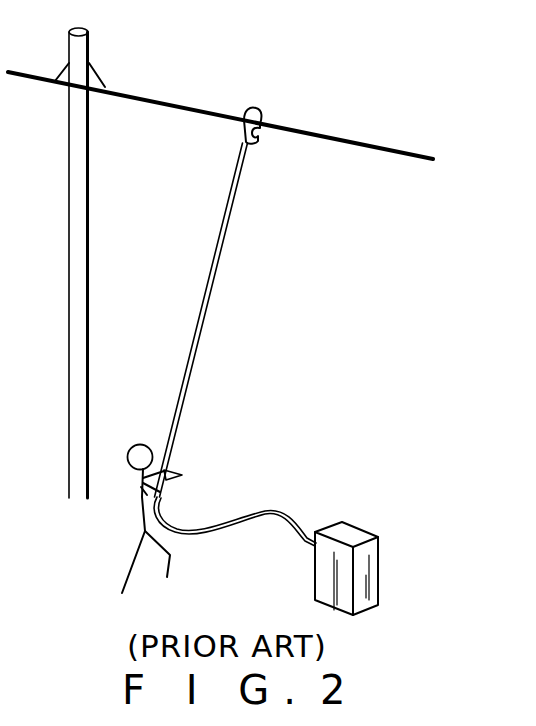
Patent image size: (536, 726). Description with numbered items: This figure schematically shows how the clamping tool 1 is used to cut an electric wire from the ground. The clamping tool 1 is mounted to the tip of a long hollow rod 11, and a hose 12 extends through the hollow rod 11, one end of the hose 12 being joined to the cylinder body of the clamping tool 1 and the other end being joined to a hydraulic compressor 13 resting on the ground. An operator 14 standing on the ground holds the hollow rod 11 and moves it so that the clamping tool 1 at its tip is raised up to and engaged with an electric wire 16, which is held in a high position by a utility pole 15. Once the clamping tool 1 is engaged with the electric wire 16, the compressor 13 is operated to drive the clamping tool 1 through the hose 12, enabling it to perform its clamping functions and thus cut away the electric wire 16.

The clamping tool 1 is at (267, 110).
The hollow rod 11 is at (198, 333).
The hose 12 is at (270, 512).
The hydraulic compressor 13 is at (380, 548).
The operator 14 is at (140, 525).
The utility pole 15 is at (82, 180).
The electric wire 16 is at (179, 103).